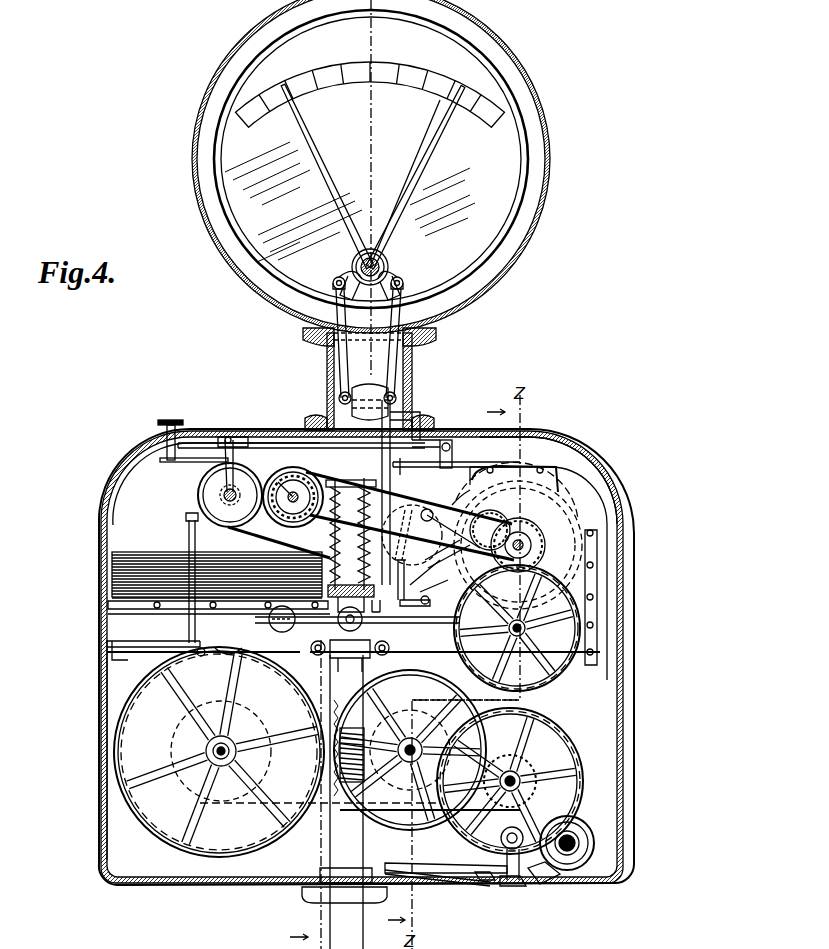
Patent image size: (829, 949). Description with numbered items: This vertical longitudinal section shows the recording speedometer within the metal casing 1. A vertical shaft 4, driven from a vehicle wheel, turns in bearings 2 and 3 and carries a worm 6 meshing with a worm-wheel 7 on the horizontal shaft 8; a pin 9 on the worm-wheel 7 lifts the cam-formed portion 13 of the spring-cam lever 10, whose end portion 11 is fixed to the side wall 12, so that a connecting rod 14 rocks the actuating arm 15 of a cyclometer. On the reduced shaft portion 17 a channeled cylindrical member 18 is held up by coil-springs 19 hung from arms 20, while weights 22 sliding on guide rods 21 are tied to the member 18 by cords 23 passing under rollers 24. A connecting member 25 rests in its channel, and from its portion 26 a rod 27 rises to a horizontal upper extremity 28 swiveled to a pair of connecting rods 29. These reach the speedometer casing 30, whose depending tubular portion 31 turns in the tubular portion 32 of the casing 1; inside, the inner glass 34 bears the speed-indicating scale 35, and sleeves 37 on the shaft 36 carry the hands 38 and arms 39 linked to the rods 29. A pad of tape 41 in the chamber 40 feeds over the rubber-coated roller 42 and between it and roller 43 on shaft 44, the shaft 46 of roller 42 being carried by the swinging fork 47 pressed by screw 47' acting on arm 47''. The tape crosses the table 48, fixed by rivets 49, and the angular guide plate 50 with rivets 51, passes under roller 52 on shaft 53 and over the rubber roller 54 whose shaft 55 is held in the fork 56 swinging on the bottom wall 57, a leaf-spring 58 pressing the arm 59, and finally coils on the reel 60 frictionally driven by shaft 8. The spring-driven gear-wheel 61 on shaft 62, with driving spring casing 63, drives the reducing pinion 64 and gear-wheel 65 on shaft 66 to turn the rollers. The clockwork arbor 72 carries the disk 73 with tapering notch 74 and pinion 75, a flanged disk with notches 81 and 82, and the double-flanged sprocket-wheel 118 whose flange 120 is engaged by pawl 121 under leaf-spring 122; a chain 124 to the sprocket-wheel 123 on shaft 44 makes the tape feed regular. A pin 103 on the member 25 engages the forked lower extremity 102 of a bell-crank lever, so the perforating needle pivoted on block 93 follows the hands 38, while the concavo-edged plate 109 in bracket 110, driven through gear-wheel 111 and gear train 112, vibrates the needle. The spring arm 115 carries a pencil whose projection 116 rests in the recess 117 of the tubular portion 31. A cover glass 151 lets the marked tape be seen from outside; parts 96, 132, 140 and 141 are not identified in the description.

The casing 1 is at (634, 636).
The bearing 2 is at (353, 730).
The bearing 3 is at (356, 930).
The shaft 4 is at (305, 680).
The worm 6 is at (338, 757).
The worm-wheel 7 is at (230, 880).
The shaft 8 is at (195, 776).
The pin 9 is at (201, 657).
The spring-cam lever 10 is at (160, 649).
The end portion 11 is at (122, 656).
The side wall 12 is at (102, 690).
The cam-formed portion 13 is at (228, 660).
The connecting rod 14 is at (182, 545).
The actuating arm 15 is at (189, 515).
The shaft portion 17 is at (356, 494).
The cylindrical member 18 is at (415, 582).
The coil-springs 19 is at (330, 546).
The arms 20 is at (331, 494).
The guide rods 21 is at (256, 620).
The weights 22 is at (272, 628).
The cords 23 is at (312, 632).
The rollers 24 is at (350, 655).
The connecting member 25 is at (392, 607).
The portion 26 is at (422, 577).
The rod 27 is at (414, 420).
The upper extremity 28 is at (327, 400).
The connecting rods 29 is at (339, 336).
The casing 30 is at (548, 195).
The tubular portion 31 is at (415, 368).
The tubular portion 32 is at (325, 372).
The inner glass 34 is at (516, 137).
The speed-indicating scale 35 is at (350, 102).
The shaft 36 is at (385, 268).
The sleeves 37 is at (388, 257).
The indicator or hand 38 is at (411, 190).
The arms 39 is at (392, 291).
The chamber 40 is at (104, 525).
The pad of tape 41 is at (108, 574).
The roller 42 is at (210, 488).
The roller 43 is at (296, 484).
The shaft 44 is at (282, 483).
The shaft 46 is at (232, 487).
The swinging fork 47 is at (242, 445).
The screw 47' is at (174, 423).
The arm 47'' is at (182, 472).
The table 48 is at (445, 463).
The screws or rivets 49 is at (456, 480).
The angular guide plate 50 is at (598, 563).
The screws or rivets 51 is at (597, 592).
The roller 52 is at (590, 845).
The shaft 53 is at (582, 848).
The roller 54 is at (500, 846).
The shaft 55 is at (540, 886).
The fork 56 is at (507, 888).
The bottom wall 57 is at (478, 886).
The leaf-spring 58 is at (445, 886).
The arm 59 is at (390, 862).
The reel 60 is at (256, 830).
The gear-wheel 61 is at (522, 700).
The shaft 62 is at (394, 718).
The driving spring casing 63 is at (417, 702).
The reducing pinion 64 is at (521, 776).
The gear-wheel 65 is at (557, 738).
The shaft 66 is at (510, 760).
The central arbor 72 is at (543, 541).
The circular disk 73 is at (614, 518).
The tapering notch 74 is at (549, 486).
The pinion 75 is at (548, 552).
The notch 81 is at (496, 486).
The notch 82 is at (517, 628).
The block 93 is at (196, 436).
The spring seat 96 is at (375, 480).
The lower extremity 102 is at (433, 604).
The pin 103 is at (441, 589).
The concavo edged metal plate 109 is at (481, 412).
The bracket 110 is at (452, 445).
The gear-wheel 111 is at (420, 432).
The train of gears 112 is at (431, 595).
The spring arm 115 is at (318, 411).
The projection 116 is at (352, 404).
The recess 117 is at (392, 410).
The sprocket-wheel 118 is at (490, 530).
The flange 120 is at (510, 545).
The pawl 121 is at (598, 480).
The leaf-spring 122 is at (524, 538).
The sprocket-wheel 123 is at (280, 520).
The chain 124 is at (268, 541).
The ratchet 132 is at (431, 532).
The ratchet wheel 140 is at (421, 528).
The pawl 141 is at (439, 514).
The cover glass 151 is at (634, 680).